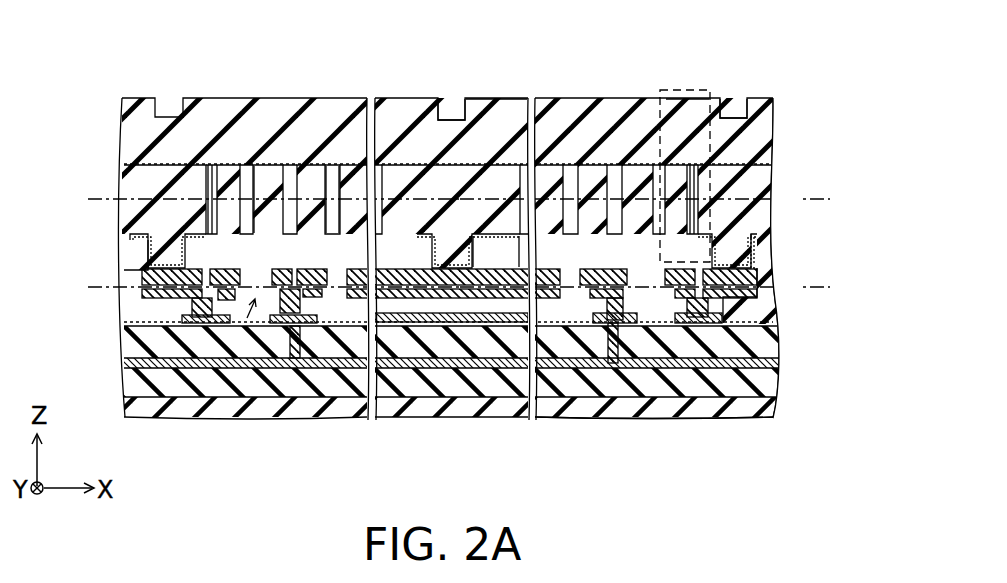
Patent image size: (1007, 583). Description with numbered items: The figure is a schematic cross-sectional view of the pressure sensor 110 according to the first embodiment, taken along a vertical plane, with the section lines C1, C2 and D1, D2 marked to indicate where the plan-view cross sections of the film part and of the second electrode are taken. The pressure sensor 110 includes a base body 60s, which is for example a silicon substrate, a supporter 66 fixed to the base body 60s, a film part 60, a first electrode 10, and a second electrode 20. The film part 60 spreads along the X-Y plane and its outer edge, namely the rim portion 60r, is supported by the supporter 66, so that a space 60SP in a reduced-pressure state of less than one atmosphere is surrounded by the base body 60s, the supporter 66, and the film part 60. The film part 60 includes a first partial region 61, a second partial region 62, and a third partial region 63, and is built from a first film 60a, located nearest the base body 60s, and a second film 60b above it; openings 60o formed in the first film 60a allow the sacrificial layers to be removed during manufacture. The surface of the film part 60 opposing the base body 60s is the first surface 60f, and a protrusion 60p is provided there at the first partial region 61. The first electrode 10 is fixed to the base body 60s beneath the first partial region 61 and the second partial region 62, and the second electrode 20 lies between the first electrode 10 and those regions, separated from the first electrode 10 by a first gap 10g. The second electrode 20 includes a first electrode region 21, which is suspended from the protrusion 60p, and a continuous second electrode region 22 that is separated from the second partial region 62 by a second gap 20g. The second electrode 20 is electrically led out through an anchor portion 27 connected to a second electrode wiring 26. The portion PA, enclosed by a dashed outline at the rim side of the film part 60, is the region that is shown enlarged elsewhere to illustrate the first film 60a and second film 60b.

The pressure sensor 110 is at (761, 83).
The film part 60 is at (280, 60).
The first surface 60f is at (124, 100).
The first film 60a is at (228, 236).
The second film 60b is at (267, 190).
The opening 60o is at (333, 192).
The protrusion 60p is at (448, 247).
The rim portion 60r is at (708, 127).
The base body 60s is at (730, 403).
The space 60SP is at (197, 398).
The first partial region 61 is at (450, 140).
The second partial region 62 is at (507, 140).
The third partial region 63 is at (687, 131).
The supporter 66 is at (737, 212).
The portion PA is at (710, 157).
The second electrode 20 is at (453, 391).
The second gap 20g is at (500, 257).
The first electrode region 21 is at (460, 290).
The second electrode region 22 is at (507, 290).
The second electrode wiring 26 is at (623, 320).
The anchor portion 27 is at (583, 290).
The first electrode 10 is at (443, 323).
The first gap 10g is at (438, 302).
The line C1 is at (97, 189).
The line C2 is at (812, 189).
The line D1 is at (97, 277).
The line D2 is at (812, 277).